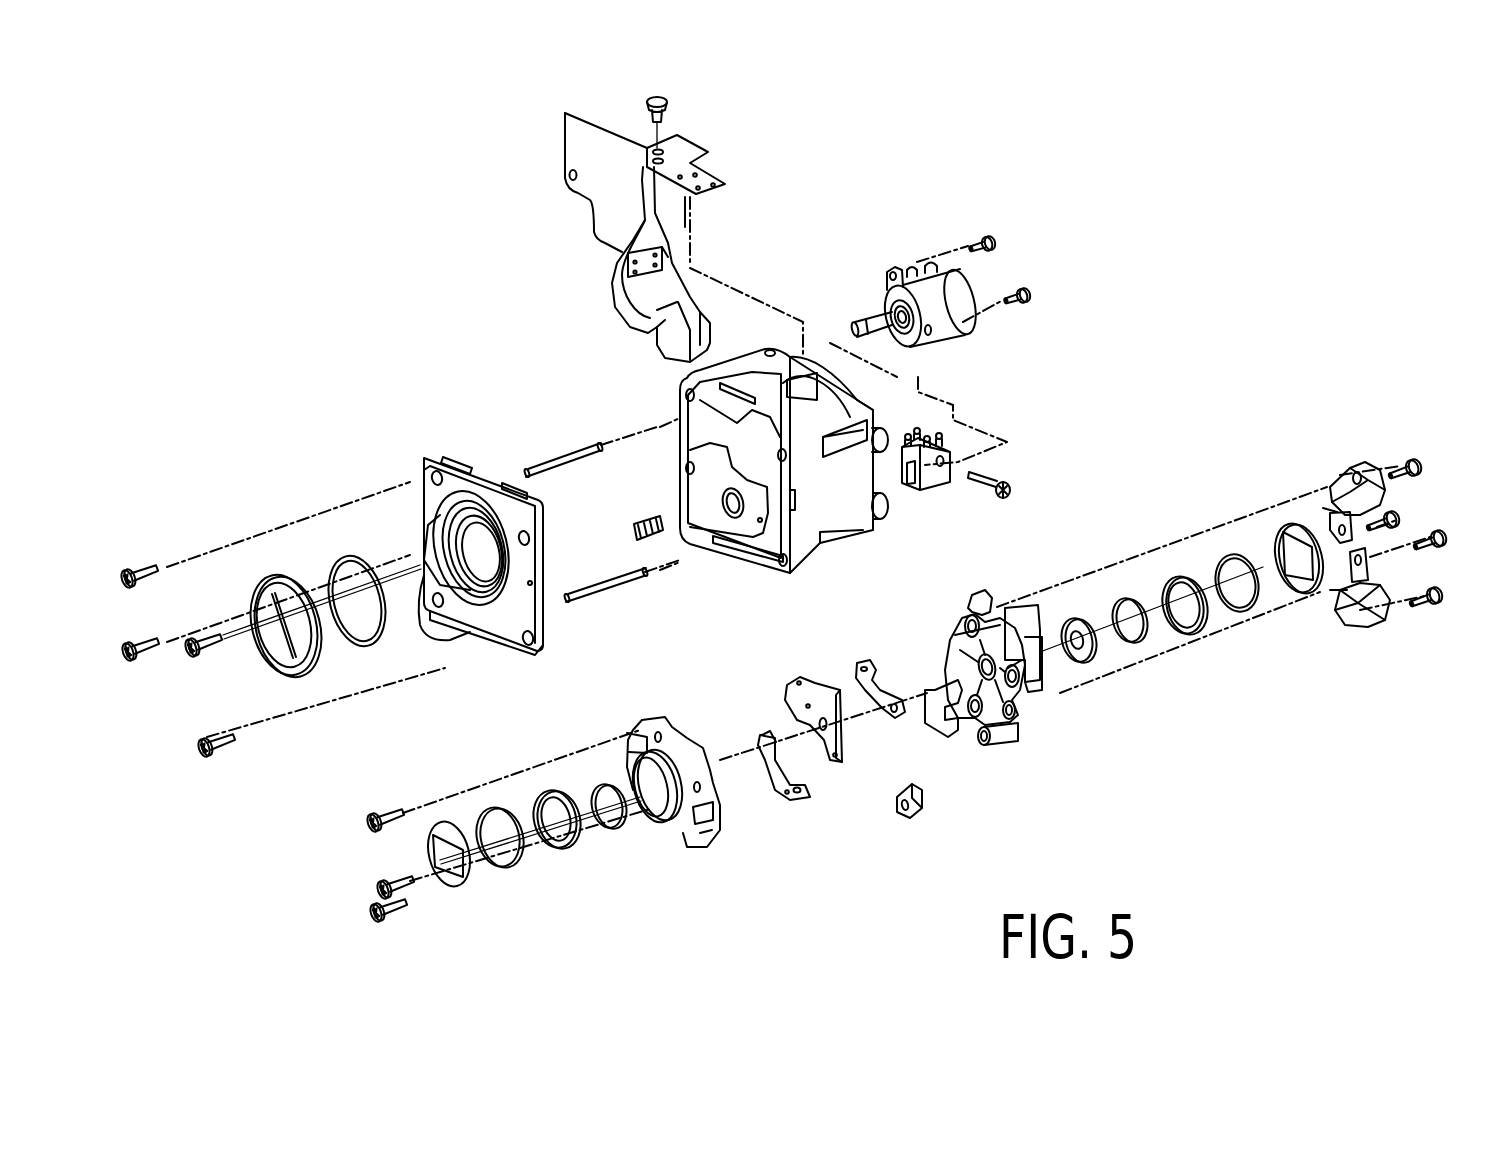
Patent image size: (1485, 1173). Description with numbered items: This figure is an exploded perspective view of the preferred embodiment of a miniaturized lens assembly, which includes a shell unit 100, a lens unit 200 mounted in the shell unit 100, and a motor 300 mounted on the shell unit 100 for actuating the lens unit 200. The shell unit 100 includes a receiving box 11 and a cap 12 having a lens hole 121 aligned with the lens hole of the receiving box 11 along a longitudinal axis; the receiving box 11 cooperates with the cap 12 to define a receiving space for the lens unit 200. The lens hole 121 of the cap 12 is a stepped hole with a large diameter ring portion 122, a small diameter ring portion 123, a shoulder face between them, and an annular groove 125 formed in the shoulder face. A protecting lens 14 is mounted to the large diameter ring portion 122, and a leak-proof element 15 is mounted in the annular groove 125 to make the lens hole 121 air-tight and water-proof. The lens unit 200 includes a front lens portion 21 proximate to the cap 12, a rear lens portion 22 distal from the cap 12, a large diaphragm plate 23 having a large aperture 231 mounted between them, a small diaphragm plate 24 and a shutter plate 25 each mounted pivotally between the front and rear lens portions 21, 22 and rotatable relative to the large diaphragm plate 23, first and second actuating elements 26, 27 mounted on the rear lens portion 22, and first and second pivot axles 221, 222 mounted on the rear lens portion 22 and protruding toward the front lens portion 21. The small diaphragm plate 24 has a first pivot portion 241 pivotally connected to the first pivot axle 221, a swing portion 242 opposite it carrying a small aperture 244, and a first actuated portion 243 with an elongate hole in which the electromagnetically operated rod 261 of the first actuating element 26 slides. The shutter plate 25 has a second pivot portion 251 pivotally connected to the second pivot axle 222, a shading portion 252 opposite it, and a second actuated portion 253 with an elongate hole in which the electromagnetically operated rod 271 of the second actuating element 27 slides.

The shell unit 100 is at (812, 572).
The receiving box 11 is at (848, 514).
The cap 12 is at (480, 632).
The lens hole 121 is at (456, 590).
The large diameter ring portion 122 is at (490, 641).
The small diameter ring portion 123 is at (510, 588).
The annular groove 125 is at (503, 591).
The protecting lens 14 is at (262, 588).
The leak-proof element 15 is at (348, 557).
The motor 300 is at (953, 285).
The lens unit 200 is at (965, 778).
The front lens portion 21 is at (668, 840).
The rear lens portion 22 is at (1027, 730).
The first pivot axle 221 is at (958, 628).
The second pivot axle 222 is at (1007, 742).
The large diaphragm plate 23 is at (832, 767).
The large aperture 231 is at (823, 693).
The small diaphragm plate 24 is at (885, 720).
The first pivot portion 241 is at (872, 660).
The swing portion 242 is at (900, 732).
The first actuated portion 243 is at (860, 668).
The small aperture 244 is at (893, 690).
The shutter plate 25 is at (772, 800).
The second pivot portion 251 is at (785, 798).
The shading portion 252 is at (772, 738).
The second actuated portion 253 is at (797, 797).
The first actuating element 26 is at (1365, 461).
The electromagnetically operated rod 261 is at (1322, 490).
The second actuating element 27 is at (1383, 607).
The electromagnetically operated rod 271 is at (1330, 622).